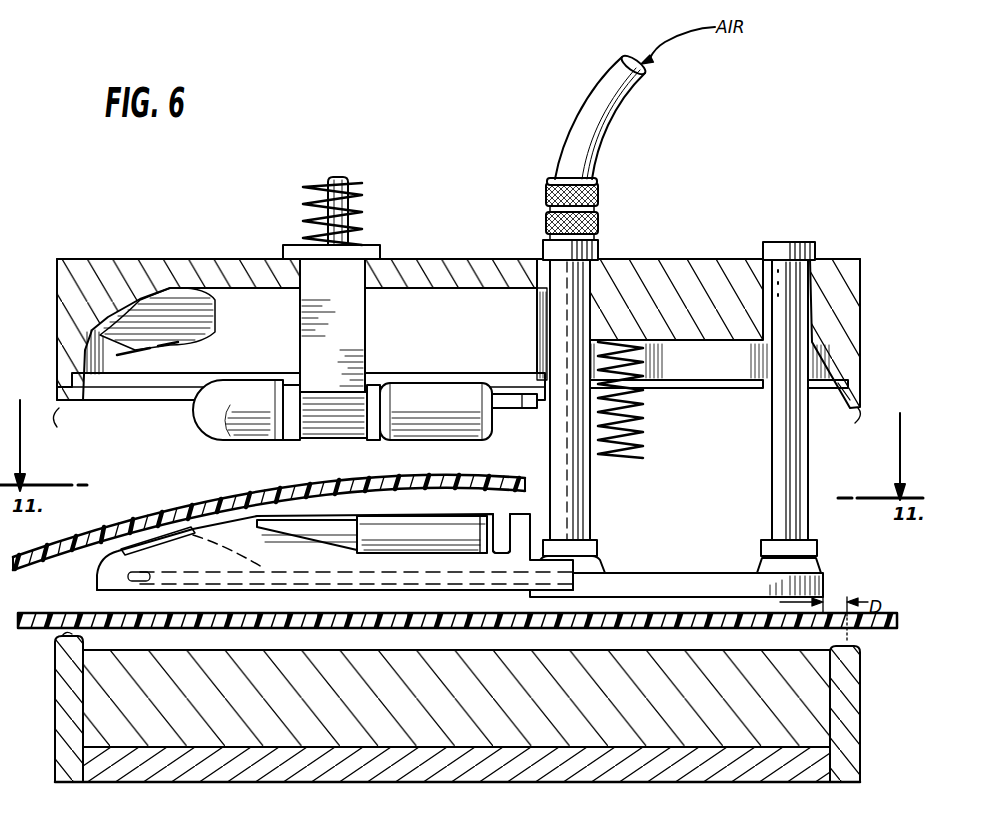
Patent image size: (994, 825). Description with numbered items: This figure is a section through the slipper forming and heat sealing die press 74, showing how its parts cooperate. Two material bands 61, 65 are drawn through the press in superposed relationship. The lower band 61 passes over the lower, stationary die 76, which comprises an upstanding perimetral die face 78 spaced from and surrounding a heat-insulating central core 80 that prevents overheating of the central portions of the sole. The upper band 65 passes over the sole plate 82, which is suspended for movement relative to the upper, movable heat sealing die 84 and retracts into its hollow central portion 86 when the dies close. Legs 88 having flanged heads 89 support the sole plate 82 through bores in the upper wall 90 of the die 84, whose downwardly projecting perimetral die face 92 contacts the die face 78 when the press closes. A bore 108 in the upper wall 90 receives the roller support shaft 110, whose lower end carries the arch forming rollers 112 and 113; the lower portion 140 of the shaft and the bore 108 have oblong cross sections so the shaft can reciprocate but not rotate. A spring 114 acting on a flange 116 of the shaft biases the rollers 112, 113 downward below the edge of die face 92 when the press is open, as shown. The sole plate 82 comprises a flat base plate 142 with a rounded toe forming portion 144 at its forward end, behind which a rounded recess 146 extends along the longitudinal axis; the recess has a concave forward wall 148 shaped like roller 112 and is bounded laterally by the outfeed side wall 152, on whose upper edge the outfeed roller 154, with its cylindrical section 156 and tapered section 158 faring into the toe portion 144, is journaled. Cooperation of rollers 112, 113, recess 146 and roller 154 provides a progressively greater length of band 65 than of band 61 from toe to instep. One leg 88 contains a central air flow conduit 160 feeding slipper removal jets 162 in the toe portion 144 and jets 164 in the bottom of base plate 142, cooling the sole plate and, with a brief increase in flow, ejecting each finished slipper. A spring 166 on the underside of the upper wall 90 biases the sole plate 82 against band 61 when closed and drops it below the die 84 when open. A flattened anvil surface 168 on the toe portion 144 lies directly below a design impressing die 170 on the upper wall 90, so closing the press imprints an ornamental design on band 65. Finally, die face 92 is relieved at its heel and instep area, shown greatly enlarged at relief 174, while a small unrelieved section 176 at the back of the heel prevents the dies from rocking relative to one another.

The band 61 is at (497, 600).
The band 65 is at (268, 490).
The slipper forming and heat sealing die press 74 is at (672, 192).
The lower, stationary die 76 is at (355, 711).
The perimetral die face 78 is at (52, 637).
The heat-insulating central core 80 is at (808, 726).
The sole plate 82 is at (330, 589).
The upper, movable heat sealing die 84 is at (445, 334).
The hollow central portion 86 is at (163, 406).
The legs 88 is at (568, 494).
The flanged heads 89 is at (598, 250).
The upper wall 90 is at (507, 260).
The perimetral die face 92 is at (456, 422).
The bore 108 is at (297, 292).
The roller support shaft 110 is at (346, 182).
The arch forming roller 112 is at (252, 382).
The arch forming roller 113 is at (470, 390).
The spring 114 is at (360, 205).
The flange 116 is at (380, 252).
The lower portion of roller support shaft 140 is at (338, 352).
The flat base plate 142 is at (642, 588).
The rounded, toe forming portion 144 is at (142, 555).
The rounded recess 146 is at (248, 498).
The concave forward wall 148 is at (200, 548).
The outfeed side wall 152 is at (507, 542).
The outfeed roller 154 is at (390, 514).
The cylindrical section 156 is at (455, 530).
The tapered section 158 is at (318, 520).
The central air flow conduit 160 is at (596, 207).
The slipper removal jets 162 is at (98, 578).
The slipper removal jets 164 is at (378, 590).
The spring 166 is at (645, 430).
The flattened anvil surface 168 is at (162, 530).
The design impressing die 170 is at (168, 344).
The relief 174 is at (522, 400).
The small unrelieved section 176 is at (855, 392).